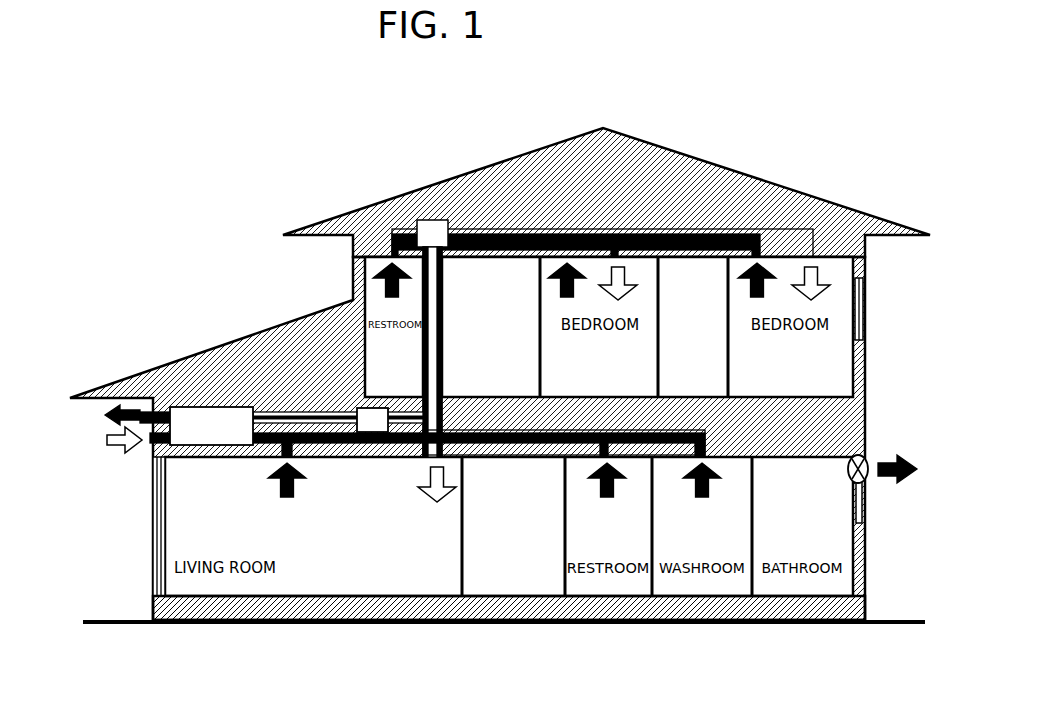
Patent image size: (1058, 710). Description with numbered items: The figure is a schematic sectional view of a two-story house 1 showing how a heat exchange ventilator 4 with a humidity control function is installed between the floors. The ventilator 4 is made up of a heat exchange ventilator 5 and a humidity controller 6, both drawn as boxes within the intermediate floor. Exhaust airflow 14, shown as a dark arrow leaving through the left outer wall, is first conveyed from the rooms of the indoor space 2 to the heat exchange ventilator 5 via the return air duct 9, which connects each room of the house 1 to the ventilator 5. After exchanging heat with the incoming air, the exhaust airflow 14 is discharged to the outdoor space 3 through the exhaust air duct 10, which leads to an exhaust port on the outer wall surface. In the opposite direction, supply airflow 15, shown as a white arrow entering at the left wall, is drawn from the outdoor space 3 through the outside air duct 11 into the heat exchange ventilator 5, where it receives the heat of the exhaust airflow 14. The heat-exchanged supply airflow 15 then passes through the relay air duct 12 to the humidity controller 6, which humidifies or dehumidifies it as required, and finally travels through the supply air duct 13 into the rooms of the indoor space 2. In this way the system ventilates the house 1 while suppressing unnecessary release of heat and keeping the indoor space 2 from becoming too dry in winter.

The house 1 is at (665, 172).
The indoor space 2 is at (293, 570).
The outdoor space 3 is at (125, 592).
The heat exchange ventilator with a humidity control function 4 is at (265, 295).
The heat exchange ventilator 5 is at (210, 423).
The humidity controller 6 is at (365, 408).
The return air duct 9 is at (530, 445).
The exhaust air duct 10 is at (160, 413).
The outside air duct 11 is at (157, 460).
The relay air duct 12 is at (270, 445).
The supply air duct 13 is at (410, 422).
The exhaust airflow 14 is at (103, 413).
The supply airflow 15 is at (105, 438).